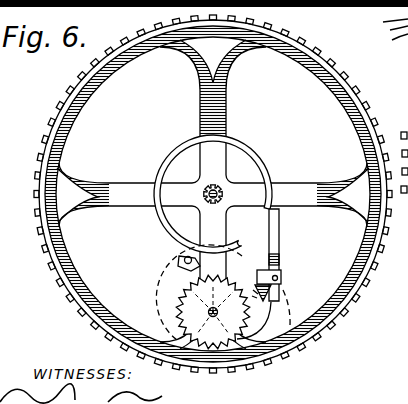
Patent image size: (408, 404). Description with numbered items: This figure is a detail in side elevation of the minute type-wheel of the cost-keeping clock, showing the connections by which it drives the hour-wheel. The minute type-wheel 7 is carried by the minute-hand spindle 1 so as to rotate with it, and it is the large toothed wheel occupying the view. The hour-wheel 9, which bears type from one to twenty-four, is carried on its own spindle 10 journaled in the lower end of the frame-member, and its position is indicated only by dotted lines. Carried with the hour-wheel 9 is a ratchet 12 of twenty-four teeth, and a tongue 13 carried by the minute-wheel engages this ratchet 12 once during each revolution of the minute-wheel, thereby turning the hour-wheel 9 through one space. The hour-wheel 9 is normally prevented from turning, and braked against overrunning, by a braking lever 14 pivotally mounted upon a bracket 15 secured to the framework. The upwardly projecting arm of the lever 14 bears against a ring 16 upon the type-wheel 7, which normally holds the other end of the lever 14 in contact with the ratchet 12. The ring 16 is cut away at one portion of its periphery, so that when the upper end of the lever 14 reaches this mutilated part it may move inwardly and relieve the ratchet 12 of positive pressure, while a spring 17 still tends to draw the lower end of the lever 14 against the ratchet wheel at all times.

The minute-hand spindle 1 is at (206, 189).
The minute type-wheel 7 is at (371, 309).
The hour-wheel 9 is at (167, 292).
The spindle 10 is at (215, 318).
The ratchet 12 is at (209, 331).
The tongue 13 is at (178, 269).
The braking lever 14 is at (266, 298).
The bracket 15 is at (281, 268).
The ring 16 is at (266, 162).
The spring 17 is at (263, 294).